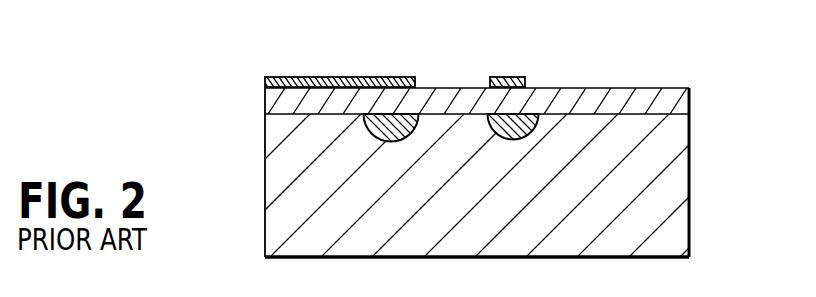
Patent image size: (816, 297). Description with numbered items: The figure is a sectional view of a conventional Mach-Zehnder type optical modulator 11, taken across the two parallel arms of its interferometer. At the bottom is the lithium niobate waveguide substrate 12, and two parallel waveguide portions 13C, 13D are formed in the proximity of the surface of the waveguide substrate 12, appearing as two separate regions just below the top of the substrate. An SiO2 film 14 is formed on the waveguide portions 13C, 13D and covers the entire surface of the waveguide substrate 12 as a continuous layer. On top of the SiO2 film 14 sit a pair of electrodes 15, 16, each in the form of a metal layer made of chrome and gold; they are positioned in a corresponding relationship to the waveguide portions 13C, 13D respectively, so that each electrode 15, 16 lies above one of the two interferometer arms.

The Mach-Zehnder type optical modulator 11 is at (689, 14).
The waveguide substrate 12 is at (692, 178).
The parallel waveguide portion 13C is at (538, 128).
The parallel waveguide portion 13D is at (412, 132).
The SiO2 film 14 is at (692, 100).
The electrode 15 is at (503, 76).
The electrode 16 is at (383, 77).